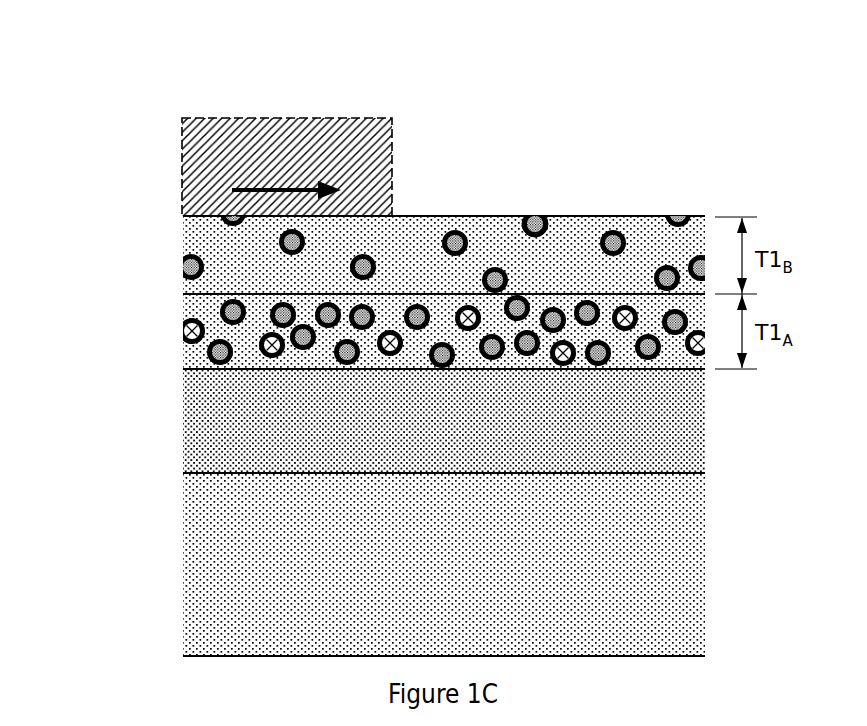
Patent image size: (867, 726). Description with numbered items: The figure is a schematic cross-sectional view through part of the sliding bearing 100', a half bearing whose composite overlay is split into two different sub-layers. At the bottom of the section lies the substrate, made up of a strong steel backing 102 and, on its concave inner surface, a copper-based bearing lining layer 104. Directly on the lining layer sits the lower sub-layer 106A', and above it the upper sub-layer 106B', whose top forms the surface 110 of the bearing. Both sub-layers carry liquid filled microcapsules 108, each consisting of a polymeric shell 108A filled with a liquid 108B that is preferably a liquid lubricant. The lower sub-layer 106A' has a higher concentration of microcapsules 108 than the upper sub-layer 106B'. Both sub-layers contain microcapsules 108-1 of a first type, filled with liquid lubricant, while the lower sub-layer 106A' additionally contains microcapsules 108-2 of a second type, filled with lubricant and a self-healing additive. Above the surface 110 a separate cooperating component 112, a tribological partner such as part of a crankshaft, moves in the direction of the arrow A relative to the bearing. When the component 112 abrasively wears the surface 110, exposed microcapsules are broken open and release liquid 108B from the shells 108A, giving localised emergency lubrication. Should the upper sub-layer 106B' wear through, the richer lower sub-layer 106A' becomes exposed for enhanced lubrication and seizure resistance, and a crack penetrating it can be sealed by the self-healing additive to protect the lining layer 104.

The sliding bearing 100' is at (476, 342).
The steel backing 102 is at (195, 592).
The bearing lining layer 104 is at (195, 435).
The lower sub-layer 106A' is at (374, 315).
The upper sub-layer 106B' is at (374, 233).
The microcapsules 108 is at (624, 306).
The shell 108A is at (535, 216).
The liquid 108B is at (547, 216).
The microcapsules of a first type 108-1 is at (183, 253).
The microcapsules of a second type 108-2 is at (180, 332).
The surface 110 is at (415, 217).
The cooperating component 112 is at (234, 137).
The direction of movement A is at (230, 188).